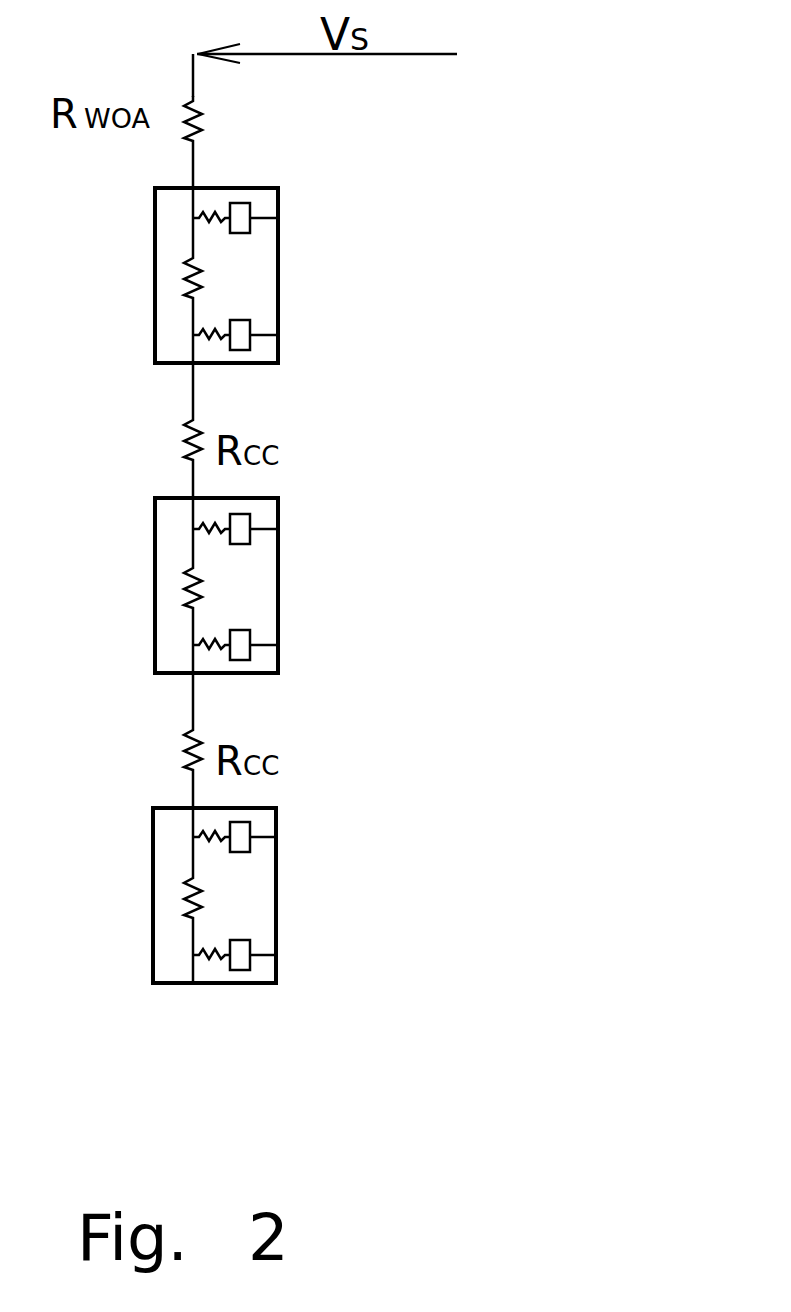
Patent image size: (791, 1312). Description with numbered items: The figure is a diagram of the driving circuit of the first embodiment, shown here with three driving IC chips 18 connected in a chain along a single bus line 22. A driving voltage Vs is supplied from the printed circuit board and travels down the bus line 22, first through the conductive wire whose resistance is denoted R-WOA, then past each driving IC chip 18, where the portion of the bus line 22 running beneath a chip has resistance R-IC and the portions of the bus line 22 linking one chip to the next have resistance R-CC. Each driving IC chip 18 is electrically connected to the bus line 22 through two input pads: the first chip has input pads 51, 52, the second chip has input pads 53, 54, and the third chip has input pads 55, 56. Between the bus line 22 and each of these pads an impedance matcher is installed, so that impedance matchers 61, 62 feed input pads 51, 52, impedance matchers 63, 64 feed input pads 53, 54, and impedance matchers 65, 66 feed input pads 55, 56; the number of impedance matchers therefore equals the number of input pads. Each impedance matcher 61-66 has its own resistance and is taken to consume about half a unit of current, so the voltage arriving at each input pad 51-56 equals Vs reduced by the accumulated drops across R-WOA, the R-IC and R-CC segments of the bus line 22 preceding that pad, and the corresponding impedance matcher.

The bus line 22 is at (193, 76).
The driving IC chip 18 is at (155, 266).
The input pad 51 is at (278, 218).
The input pad 52 is at (278, 335).
The input pad 53 is at (278, 529).
The input pad 54 is at (278, 645).
The input pad 55 is at (276, 837).
The input pad 56 is at (276, 955).
The impedance matcher 61 is at (214, 218).
The impedance matcher 62 is at (220, 338).
The impedance matcher 63 is at (214, 529).
The impedance matcher 64 is at (220, 648).
The impedance matcher 65 is at (214, 837).
The impedance matcher 66 is at (220, 958).